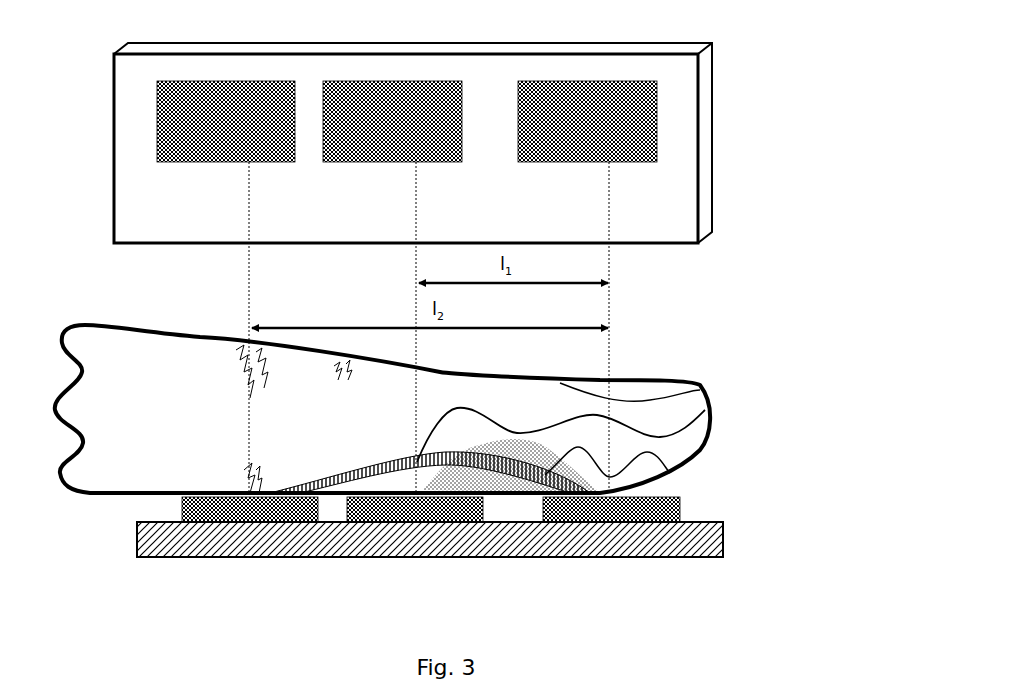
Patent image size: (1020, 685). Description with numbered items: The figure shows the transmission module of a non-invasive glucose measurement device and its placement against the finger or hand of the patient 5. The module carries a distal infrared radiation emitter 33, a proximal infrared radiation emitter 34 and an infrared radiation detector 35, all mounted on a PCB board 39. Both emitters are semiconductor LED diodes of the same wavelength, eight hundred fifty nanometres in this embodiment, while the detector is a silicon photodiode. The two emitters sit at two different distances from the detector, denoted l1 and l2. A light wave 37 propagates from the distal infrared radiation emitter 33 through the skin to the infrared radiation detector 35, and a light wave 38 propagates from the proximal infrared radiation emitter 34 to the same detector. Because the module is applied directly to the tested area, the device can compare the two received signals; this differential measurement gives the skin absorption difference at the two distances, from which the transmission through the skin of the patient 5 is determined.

The patient 5 is at (128, 438).
The distal infrared radiation emitter 33 is at (180, 108).
The proximal infrared radiation emitter 34 is at (412, 148).
The infrared radiation detector 35 is at (640, 145).
The light wave 37 is at (693, 413).
The light wave 38 is at (660, 487).
The PCB board 39 is at (655, 540).